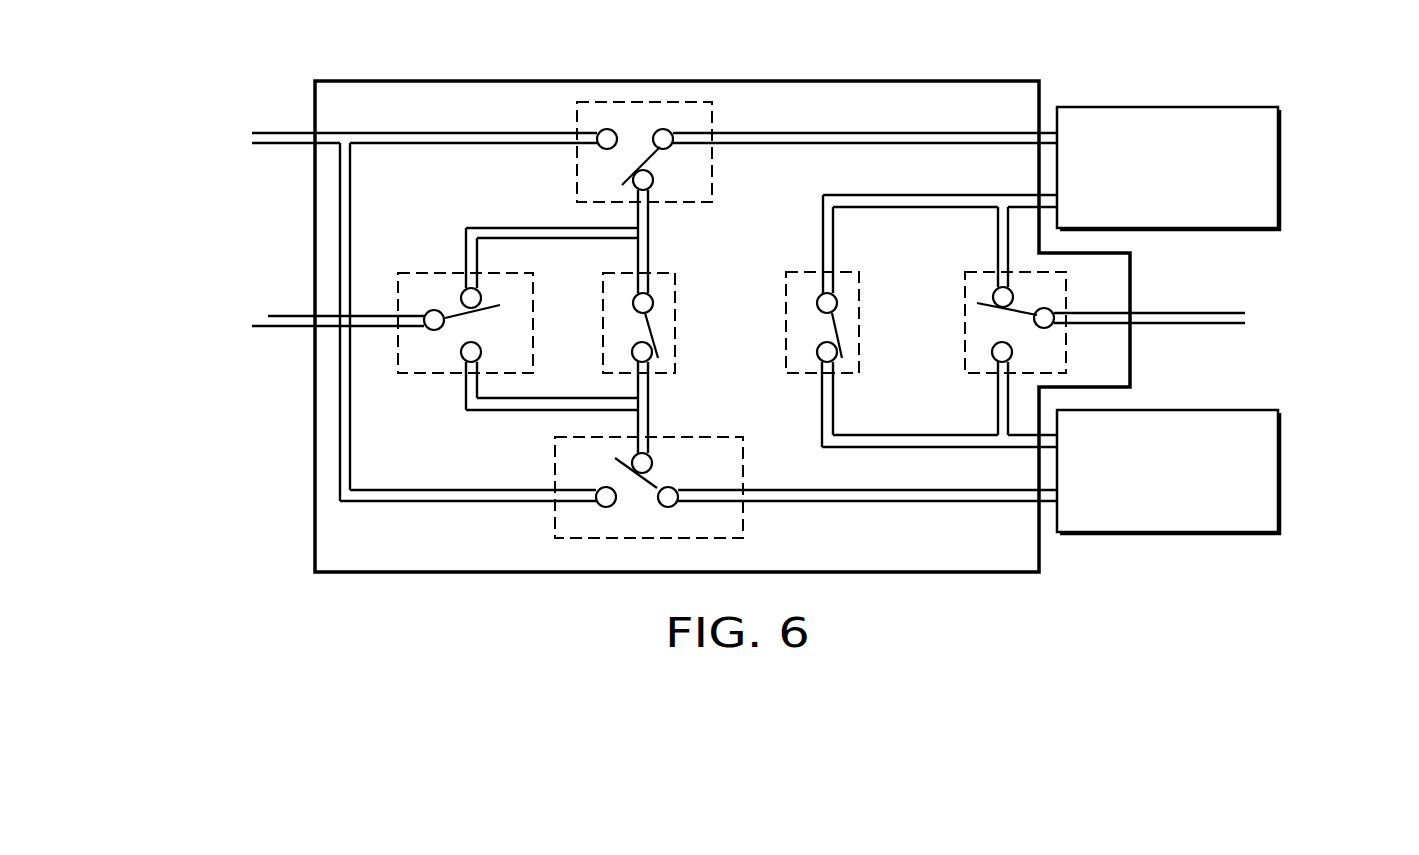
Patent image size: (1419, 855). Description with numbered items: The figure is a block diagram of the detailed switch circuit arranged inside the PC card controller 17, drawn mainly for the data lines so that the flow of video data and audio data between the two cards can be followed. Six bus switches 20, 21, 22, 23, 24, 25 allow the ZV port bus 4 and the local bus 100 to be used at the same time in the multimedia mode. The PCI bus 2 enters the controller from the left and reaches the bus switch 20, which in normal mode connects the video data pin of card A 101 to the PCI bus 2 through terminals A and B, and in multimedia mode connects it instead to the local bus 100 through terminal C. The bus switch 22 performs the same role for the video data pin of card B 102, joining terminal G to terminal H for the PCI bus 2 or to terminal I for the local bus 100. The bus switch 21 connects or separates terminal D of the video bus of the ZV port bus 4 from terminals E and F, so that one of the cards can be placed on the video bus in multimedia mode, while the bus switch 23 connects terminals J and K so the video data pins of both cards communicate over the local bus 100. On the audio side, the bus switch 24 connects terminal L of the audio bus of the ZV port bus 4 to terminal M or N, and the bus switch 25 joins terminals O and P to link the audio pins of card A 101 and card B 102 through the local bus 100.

The PC card controller 17 is at (898, 80).
The internal PCI bus 2 is at (283, 145).
The ZV port bus 4 is at (303, 328).
The bus switch 20 is at (713, 163).
The bus switch 21 is at (418, 270).
The bus switch 22 is at (746, 456).
The bus switch 23 is at (678, 330).
The bus switch 24 is at (966, 377).
The bus switch 25 is at (862, 286).
The local bus 100 is at (650, 236).
The card A 101 is at (1125, 107).
The card B 102 is at (1155, 535).